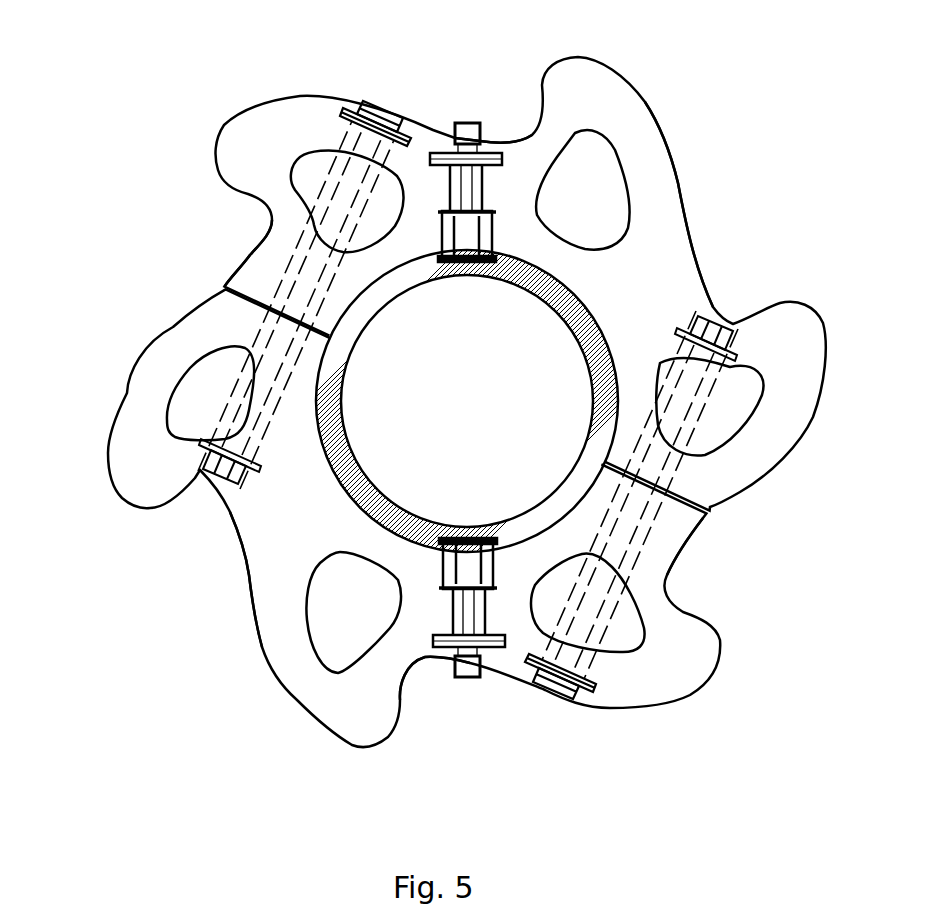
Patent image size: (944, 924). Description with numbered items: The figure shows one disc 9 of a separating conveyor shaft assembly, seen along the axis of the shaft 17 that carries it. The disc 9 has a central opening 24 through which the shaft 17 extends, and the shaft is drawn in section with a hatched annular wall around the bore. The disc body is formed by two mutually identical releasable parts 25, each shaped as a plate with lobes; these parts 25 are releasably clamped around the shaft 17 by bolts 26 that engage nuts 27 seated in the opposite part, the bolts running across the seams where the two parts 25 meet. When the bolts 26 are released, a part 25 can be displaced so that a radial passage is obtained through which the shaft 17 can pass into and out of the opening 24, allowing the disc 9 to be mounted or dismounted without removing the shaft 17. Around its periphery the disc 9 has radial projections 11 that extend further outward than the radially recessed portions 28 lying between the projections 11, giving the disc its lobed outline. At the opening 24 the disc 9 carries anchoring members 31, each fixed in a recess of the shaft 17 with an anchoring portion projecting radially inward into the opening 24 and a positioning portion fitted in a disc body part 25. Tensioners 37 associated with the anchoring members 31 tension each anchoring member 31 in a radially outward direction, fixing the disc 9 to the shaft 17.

The disc 9 is at (637, 85).
The radial projection 11 is at (579, 58).
The shaft 17 is at (588, 302).
The opening 24 is at (356, 510).
The releasable part 25 is at (679, 155).
The bolt 26 is at (366, 105).
The nut 27 is at (731, 340).
The radially recessed portion 28 is at (494, 140).
The anchoring member 31 is at (483, 233).
The tensioner 37 is at (466, 200).